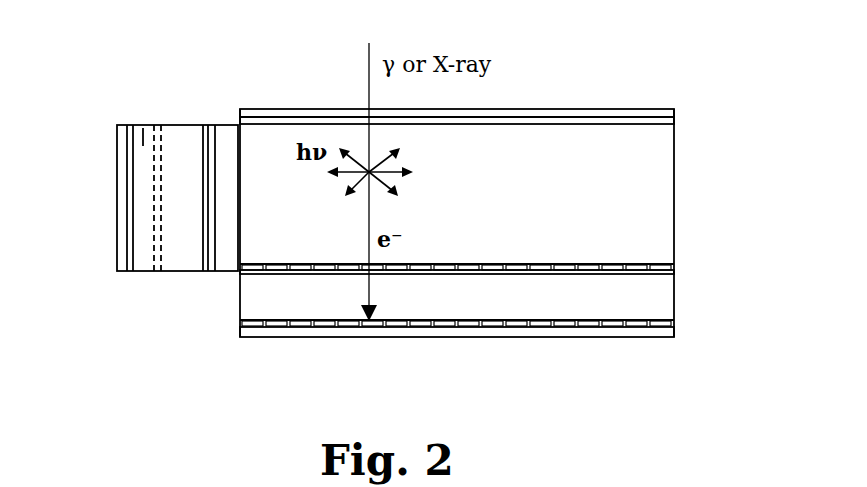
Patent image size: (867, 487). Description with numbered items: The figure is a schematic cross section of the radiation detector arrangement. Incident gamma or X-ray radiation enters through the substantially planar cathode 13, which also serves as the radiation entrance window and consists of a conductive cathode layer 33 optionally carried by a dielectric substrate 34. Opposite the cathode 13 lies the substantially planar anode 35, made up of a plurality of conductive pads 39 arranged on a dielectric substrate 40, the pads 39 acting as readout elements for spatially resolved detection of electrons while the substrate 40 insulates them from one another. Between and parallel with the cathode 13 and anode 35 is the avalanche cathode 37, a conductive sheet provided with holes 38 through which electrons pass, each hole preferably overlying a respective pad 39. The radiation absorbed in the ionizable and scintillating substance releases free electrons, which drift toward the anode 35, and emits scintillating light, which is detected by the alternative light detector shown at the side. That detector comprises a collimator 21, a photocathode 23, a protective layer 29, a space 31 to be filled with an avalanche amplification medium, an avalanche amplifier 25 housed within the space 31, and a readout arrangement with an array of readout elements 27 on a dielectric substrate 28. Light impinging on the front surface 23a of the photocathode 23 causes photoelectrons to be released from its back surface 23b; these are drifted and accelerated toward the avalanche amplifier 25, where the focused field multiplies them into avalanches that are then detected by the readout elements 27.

The cathode 13 is at (494, 118).
The light collimator 21 is at (165, 194).
The photocathode 23 is at (208, 136).
The front surface 23a is at (215, 152).
The back surface 23b is at (203, 172).
The avalanche amplifier 25 is at (143, 128).
The readout elements 27 is at (132, 264).
The dielectric substrate 28 is at (122, 263).
The protective layer 29 is at (195, 194).
The space 31 is at (154, 134).
The conductive cathode layer 33 is at (638, 125).
The dielectric substrate 34 is at (627, 111).
The anode 35 is at (488, 365).
The avalanche cathode 37 is at (640, 272).
The holes 38 is at (614, 264).
The conductive pads 39 is at (560, 326).
The dielectric substrate 40 is at (653, 333).